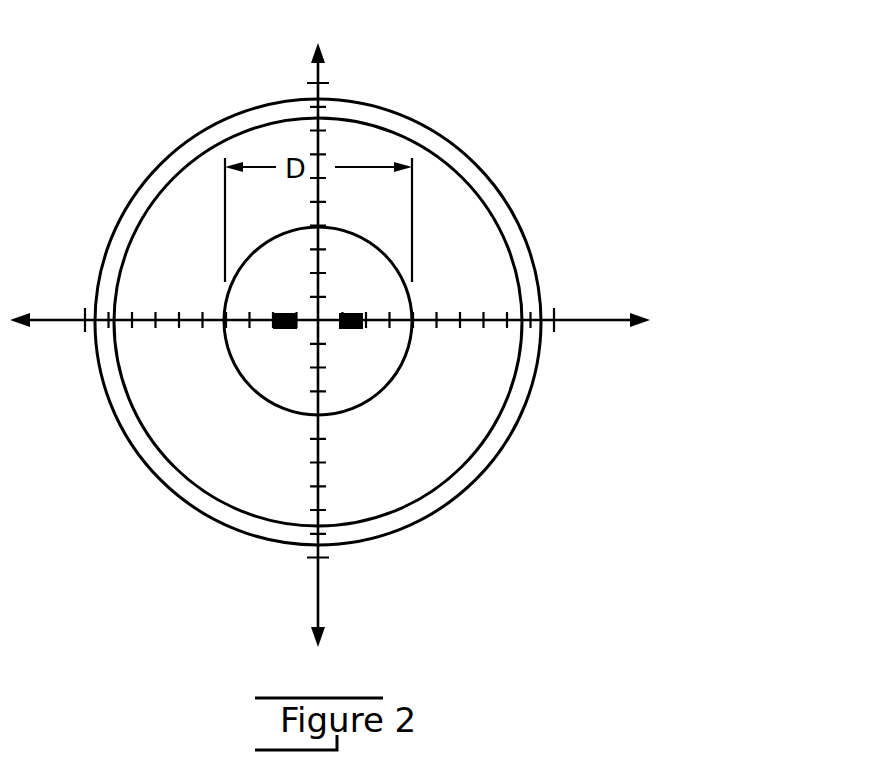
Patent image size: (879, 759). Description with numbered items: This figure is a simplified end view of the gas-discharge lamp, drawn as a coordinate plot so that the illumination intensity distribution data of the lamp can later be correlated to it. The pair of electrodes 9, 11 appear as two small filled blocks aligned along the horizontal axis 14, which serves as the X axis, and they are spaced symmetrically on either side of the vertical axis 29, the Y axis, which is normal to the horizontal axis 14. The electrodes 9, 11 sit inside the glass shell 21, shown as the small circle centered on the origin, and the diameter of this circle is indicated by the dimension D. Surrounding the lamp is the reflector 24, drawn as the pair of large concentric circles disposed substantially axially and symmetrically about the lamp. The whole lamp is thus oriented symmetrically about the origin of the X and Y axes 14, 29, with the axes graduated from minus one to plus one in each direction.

The electrode 9 is at (360, 286).
The electrode 11 is at (283, 312).
The axis 14 is at (575, 318).
The glass shell 21 is at (388, 383).
The reflector 24 is at (400, 117).
The vertical axis 29 is at (320, 608).